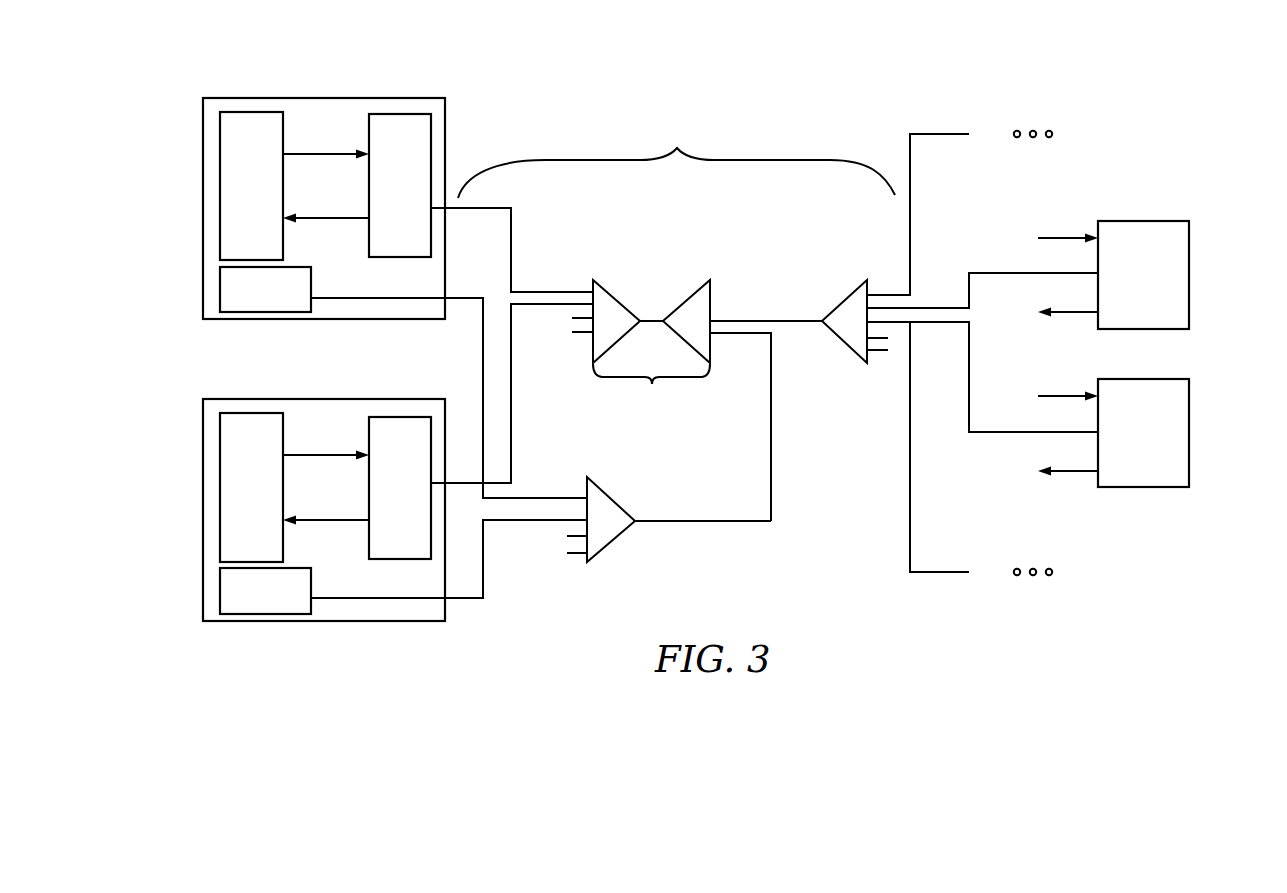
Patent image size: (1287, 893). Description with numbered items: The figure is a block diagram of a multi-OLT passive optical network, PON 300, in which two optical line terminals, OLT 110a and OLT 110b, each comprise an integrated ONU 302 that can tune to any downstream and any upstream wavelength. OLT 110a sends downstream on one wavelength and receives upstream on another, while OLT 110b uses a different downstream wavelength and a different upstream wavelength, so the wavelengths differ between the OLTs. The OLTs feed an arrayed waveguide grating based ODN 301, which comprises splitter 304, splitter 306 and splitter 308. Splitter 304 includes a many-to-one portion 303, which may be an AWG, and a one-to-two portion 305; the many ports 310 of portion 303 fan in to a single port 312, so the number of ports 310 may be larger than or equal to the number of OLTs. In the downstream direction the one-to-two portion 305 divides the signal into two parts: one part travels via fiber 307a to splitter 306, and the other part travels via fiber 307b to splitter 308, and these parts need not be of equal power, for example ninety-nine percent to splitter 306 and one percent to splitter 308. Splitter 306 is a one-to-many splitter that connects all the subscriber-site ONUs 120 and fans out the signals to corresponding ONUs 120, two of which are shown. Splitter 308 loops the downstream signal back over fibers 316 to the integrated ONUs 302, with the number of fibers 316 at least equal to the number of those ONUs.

The PON 300 is at (219, 41).
The OLT 110a is at (397, 98).
The OLT 110b is at (397, 399).
The integrated ONU 302 is at (314, 283).
The ODN 301 is at (676, 161).
The n:1 portion 303 is at (611, 290).
The port 312 is at (649, 321).
The splitter 304 is at (651, 388).
The 1:2 portion 305 is at (712, 291).
The splitter 306 is at (847, 348).
The fiber 307a is at (800, 321).
The fiber 307b is at (740, 335).
The splitter 308 is at (616, 541).
The ports 310 is at (534, 291).
The fibers 316 is at (532, 497).
The ONU 120 is at (1190, 272).